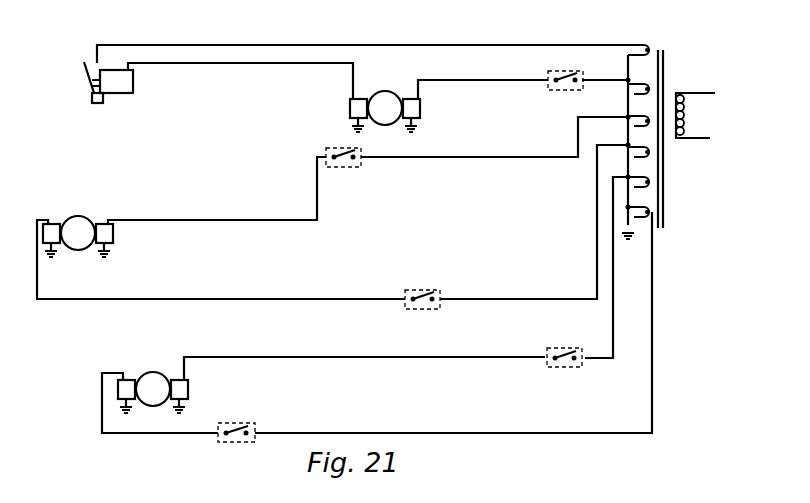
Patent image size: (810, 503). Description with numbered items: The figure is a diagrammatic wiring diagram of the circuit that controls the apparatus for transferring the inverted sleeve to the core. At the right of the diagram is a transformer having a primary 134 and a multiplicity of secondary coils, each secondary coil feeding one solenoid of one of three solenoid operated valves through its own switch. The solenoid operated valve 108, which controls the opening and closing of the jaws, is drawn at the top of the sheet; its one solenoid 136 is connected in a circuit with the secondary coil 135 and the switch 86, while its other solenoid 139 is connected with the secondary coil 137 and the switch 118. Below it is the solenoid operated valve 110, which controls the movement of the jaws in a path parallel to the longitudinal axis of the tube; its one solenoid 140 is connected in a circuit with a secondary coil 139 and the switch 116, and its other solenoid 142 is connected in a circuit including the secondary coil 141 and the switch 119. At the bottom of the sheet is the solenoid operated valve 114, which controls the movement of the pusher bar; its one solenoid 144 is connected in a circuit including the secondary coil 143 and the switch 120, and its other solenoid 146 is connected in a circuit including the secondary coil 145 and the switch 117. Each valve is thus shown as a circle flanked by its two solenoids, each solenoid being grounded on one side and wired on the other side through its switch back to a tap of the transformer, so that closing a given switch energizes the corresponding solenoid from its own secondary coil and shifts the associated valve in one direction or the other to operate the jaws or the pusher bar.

The switch 86 is at (88, 85).
The solenoid operated valve 108 is at (396, 120).
The solenoid 136 is at (360, 99).
The solenoid / secondary coil 139 is at (412, 97).
The switch 118 is at (566, 91).
The secondary coil 135 is at (650, 52).
The secondary coil 137 is at (659, 82).
The primary 134 is at (686, 89).
The secondary coil 141 is at (654, 154).
The secondary coil 143 is at (654, 184).
The secondary coil 145 is at (656, 213).
The switch 116 is at (332, 150).
The solenoid operated valve 110 is at (80, 216).
The solenoid 142 is at (52, 224).
The solenoid 140 is at (105, 224).
The switch 119 is at (422, 293).
The switch 120 is at (584, 333).
The solenoid operated valve 114 is at (154, 372).
The solenoid 146 is at (128, 380).
The solenoid 144 is at (180, 380).
The switch 117 is at (230, 444).